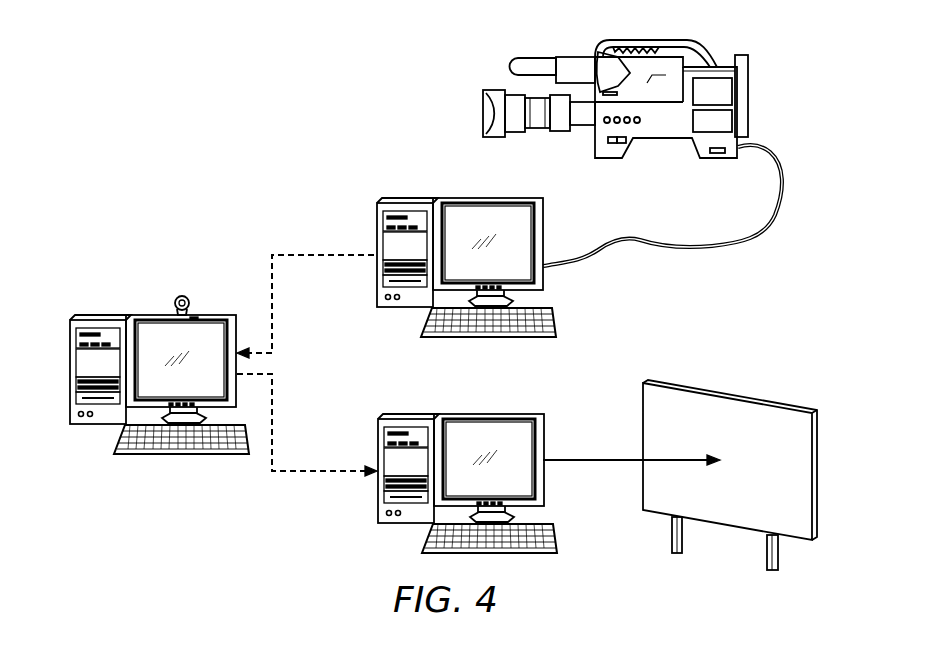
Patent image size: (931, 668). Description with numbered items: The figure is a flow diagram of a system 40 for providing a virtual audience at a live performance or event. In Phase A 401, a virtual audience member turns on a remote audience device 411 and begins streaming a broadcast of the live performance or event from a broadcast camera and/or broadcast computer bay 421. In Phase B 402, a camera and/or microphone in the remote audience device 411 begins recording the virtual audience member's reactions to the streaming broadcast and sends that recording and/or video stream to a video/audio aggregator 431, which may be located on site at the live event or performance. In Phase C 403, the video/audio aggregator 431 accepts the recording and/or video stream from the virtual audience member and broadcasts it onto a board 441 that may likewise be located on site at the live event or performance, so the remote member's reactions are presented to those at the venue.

The system 40 is at (219, 191).
The remote audience device 411 is at (104, 318).
The broadcast camera and/or broadcast computer bay 421 is at (400, 190).
The video/audio aggregator 431 is at (378, 437).
The board 441 is at (658, 407).
The Phase A 401 is at (312, 253).
The Phase B 402 is at (308, 474).
The Phase C 403 is at (571, 463).